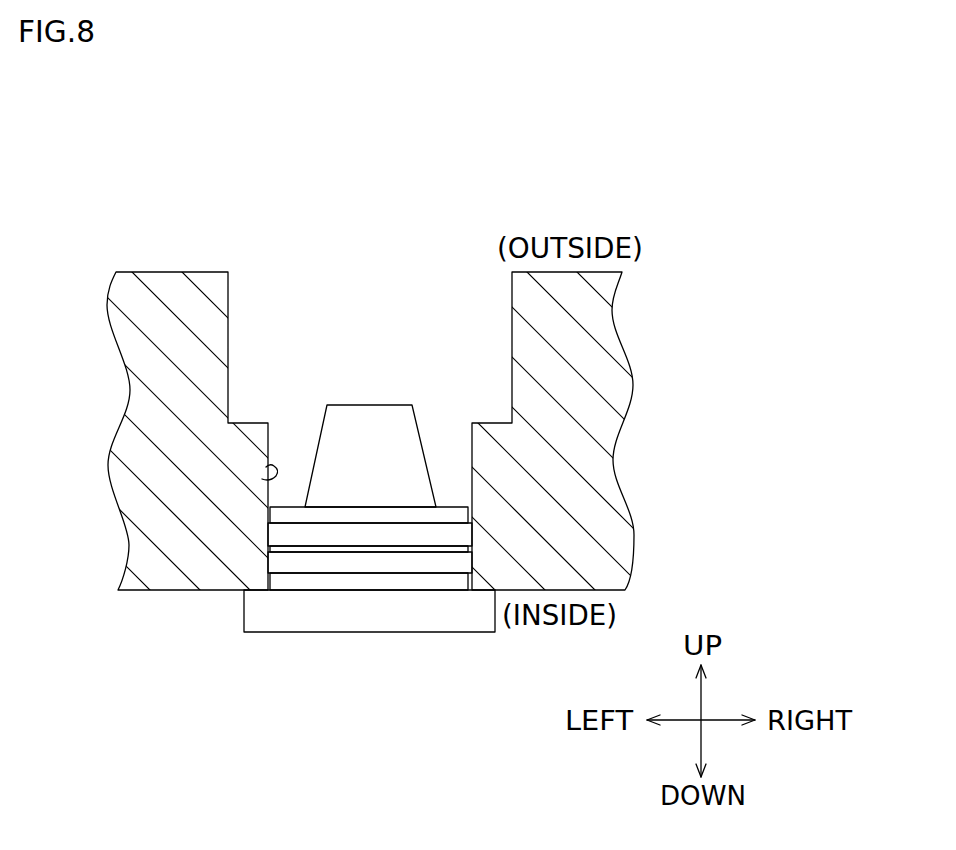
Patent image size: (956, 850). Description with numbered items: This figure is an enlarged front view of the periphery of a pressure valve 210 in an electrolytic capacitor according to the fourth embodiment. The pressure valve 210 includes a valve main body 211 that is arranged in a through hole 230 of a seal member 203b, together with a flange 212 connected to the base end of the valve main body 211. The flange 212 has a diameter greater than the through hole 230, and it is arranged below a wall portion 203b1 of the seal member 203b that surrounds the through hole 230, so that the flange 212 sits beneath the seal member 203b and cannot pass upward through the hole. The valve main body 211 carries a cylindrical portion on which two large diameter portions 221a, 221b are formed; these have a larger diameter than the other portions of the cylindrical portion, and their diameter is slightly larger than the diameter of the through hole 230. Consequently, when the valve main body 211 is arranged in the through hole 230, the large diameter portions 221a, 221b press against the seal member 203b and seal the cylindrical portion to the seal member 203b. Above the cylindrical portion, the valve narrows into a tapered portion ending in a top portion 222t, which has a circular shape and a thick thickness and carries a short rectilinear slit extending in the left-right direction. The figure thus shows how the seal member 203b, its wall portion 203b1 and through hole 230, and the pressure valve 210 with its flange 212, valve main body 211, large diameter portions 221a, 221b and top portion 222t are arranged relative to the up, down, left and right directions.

The pressure valve 210 is at (372, 285).
The valve main body 211 is at (439, 438).
The flange 212 is at (272, 634).
The large diameter portion 221a is at (458, 534).
The large diameter portion 221b is at (458, 562).
The top portion 222t is at (357, 403).
The through hole 230 is at (262, 479).
The seal member 203b is at (602, 431).
The wall portion 203b1 is at (253, 553).